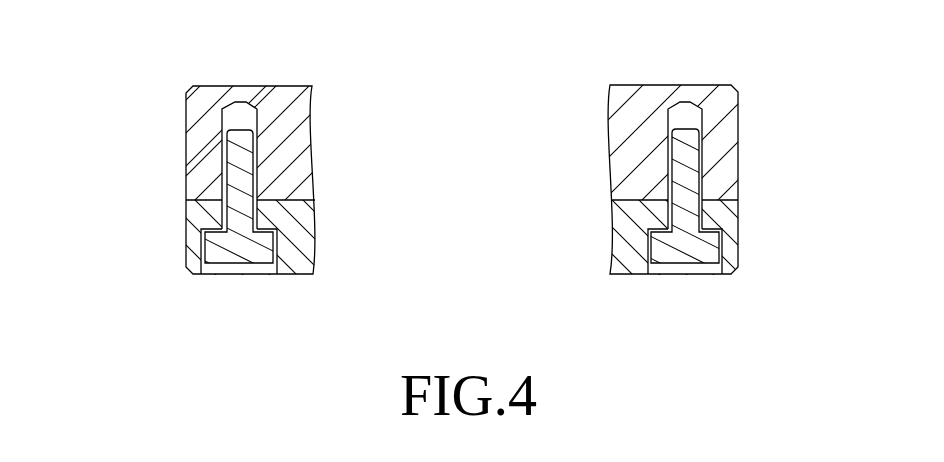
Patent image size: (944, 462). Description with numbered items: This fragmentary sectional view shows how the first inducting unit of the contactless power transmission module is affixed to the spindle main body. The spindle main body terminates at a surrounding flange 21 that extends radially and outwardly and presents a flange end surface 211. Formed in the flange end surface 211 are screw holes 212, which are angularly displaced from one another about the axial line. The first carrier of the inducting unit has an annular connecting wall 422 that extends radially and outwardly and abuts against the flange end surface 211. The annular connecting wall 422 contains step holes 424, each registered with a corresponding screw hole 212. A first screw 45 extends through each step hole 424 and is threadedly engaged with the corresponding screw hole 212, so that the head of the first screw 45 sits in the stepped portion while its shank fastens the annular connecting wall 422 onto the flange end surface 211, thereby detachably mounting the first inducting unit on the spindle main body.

The surrounding flange 21 is at (202, 96).
The flange end surface 211 is at (203, 197).
The screw hole 212 is at (220, 123).
The annular connecting wall 422 is at (186, 237).
The step hole 424 is at (200, 251).
The first screw 45 is at (240, 243).